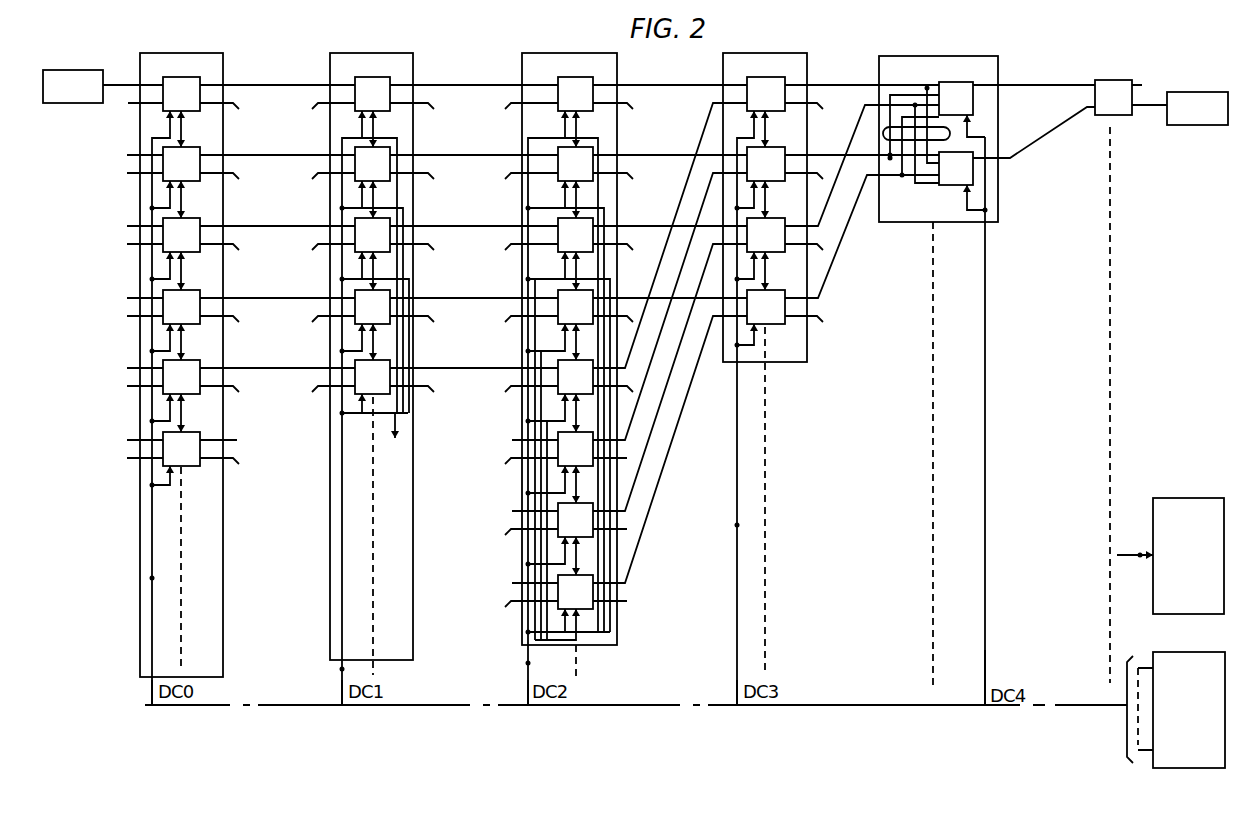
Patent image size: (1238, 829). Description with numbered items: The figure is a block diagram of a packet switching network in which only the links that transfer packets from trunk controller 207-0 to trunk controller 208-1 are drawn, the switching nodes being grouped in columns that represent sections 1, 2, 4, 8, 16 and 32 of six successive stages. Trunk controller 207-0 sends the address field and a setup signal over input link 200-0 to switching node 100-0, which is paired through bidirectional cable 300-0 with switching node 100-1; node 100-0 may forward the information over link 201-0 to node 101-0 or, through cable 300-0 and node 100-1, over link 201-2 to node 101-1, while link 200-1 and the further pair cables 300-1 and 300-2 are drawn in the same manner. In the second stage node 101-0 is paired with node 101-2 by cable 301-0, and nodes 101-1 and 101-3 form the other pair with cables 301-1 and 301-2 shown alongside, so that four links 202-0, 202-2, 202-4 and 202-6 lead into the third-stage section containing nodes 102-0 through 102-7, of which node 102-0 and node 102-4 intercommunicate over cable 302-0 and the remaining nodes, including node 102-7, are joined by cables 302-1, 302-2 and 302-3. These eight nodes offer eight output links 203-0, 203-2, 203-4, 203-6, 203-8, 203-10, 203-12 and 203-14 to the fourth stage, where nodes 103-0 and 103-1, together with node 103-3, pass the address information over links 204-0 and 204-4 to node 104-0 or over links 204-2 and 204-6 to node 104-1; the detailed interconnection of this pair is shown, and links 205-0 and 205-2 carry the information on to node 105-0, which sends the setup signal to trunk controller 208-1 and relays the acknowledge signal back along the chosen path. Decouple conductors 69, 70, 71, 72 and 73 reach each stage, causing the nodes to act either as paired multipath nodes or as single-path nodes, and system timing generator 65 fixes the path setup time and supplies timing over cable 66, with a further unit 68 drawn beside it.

The section of stage one 1 is at (171, 50).
The section of stage two 2 is at (358, 52).
The section of stage three 4 is at (554, 52).
The fourth data channel section 8 is at (756, 52).
The fifth data channel section 16 is at (918, 52).
The output interface block 32 is at (1134, 79).
The system timing generator 65 is at (1213, 499).
The cable 66 is at (1140, 560).
The control processor 68 is at (1210, 652).
The data channel DC0 connection 69 is at (141, 700).
The data channel DC1 connection 70 is at (341, 700).
The data channel DC2 connection 71 is at (527, 700).
The data channel DC3 connection 72 is at (739, 700).
The data channel DC4 connection 73 is at (990, 659).
The switching node 100-0 is at (208, 79).
The switching node 100-1 is at (170, 181).
The switching node 101-0 is at (406, 79).
The switching node 101-1 is at (390, 168).
The switching node 101-2 is at (390, 250).
The switching node 101-3 is at (390, 320).
The switching node 102-0 is at (556, 66).
The switching node 102-4 is at (558, 378).
The switching node 102-7 is at (580, 612).
The switching node 103-0 is at (798, 79).
The switching node 103-1 is at (762, 186).
The time slot interchange element 103-3 is at (762, 327).
The switching node 104-0 is at (929, 78).
The switching node 104-1 is at (944, 185).
The switching node 105-0 is at (1126, 116).
The input link 200-0 is at (108, 95).
The input line 200-1 is at (128, 103).
The link 201-0 is at (250, 72).
The link 201-2 is at (250, 138).
The link 202-0 is at (440, 72).
The link 202-2 is at (441, 140).
The link 202-4 is at (440, 210).
The link 202-6 is at (438, 283).
The link 203-0 is at (646, 72).
The link 203-2 is at (640, 138).
The link 203-4 is at (626, 205).
The link 203-6 is at (700, 310).
The link 203-8 is at (655, 410).
The link 203-10 is at (652, 440).
The link 203-12 is at (645, 485).
The link 203-14 is at (640, 510).
The link 204-0 is at (820, 72).
The link 204-2 is at (836, 175).
The link 204-4 is at (825, 215).
The link 204-6 is at (835, 270).
The data line 205-0 is at (1018, 72).
The data line 205-2 is at (1012, 158).
The trunk controller 207-0 is at (103, 67).
The trunk controller 208-1 is at (1171, 76).
The cable 300-0 is at (185, 128).
The control connection 300-1 is at (185, 270).
The control connection 300-2 is at (185, 412).
The cable 301-0 is at (378, 120).
The control connection 301-1 is at (378, 192).
The control connection 301-2 is at (431, 436).
The cable 302-0 is at (582, 122).
The control connection 302-1 is at (582, 192).
The control connection 302-2 is at (582, 266).
The control connection 302-3 is at (535, 365).